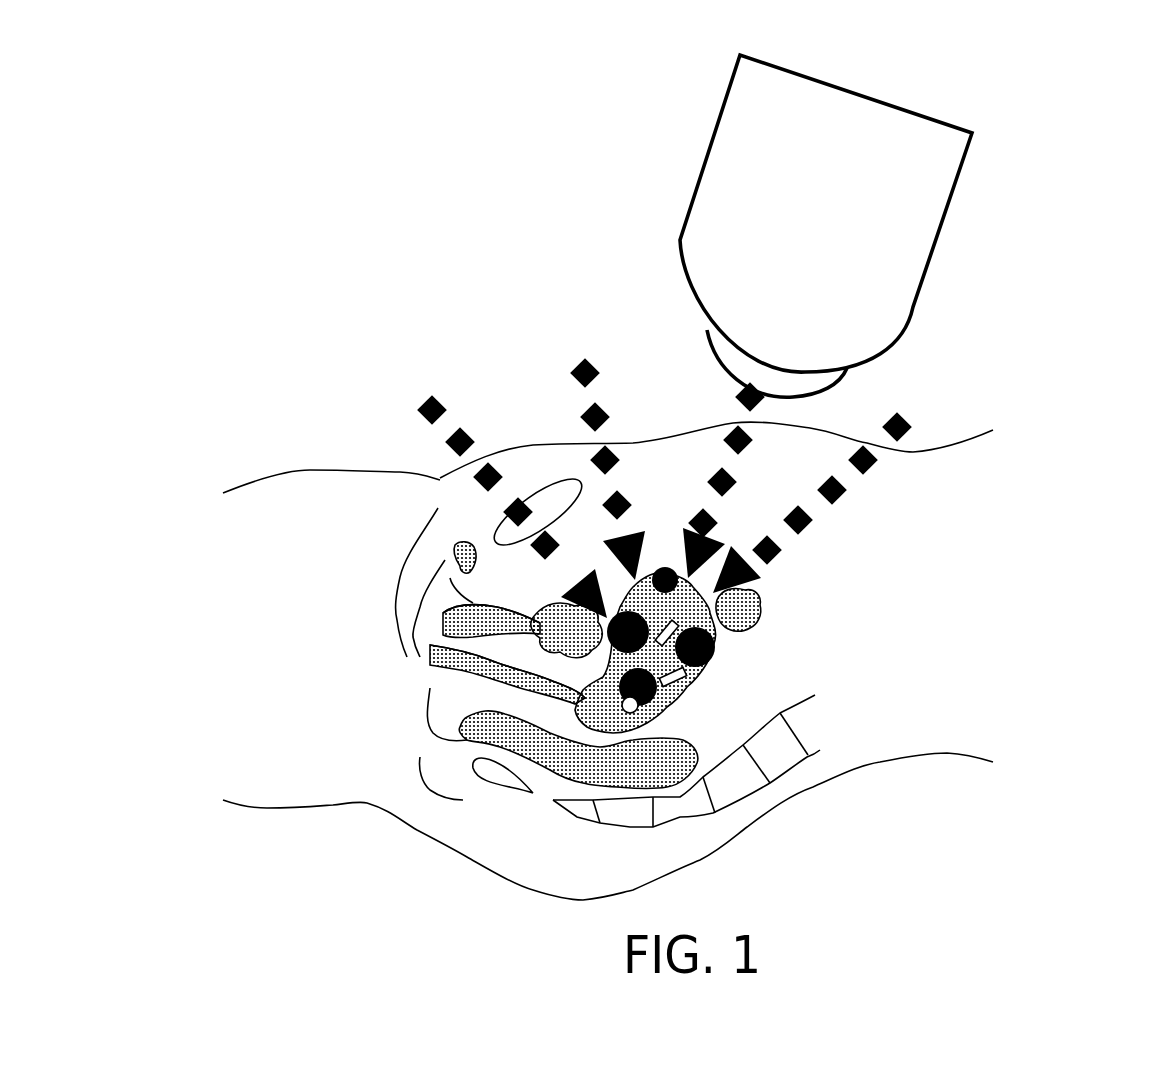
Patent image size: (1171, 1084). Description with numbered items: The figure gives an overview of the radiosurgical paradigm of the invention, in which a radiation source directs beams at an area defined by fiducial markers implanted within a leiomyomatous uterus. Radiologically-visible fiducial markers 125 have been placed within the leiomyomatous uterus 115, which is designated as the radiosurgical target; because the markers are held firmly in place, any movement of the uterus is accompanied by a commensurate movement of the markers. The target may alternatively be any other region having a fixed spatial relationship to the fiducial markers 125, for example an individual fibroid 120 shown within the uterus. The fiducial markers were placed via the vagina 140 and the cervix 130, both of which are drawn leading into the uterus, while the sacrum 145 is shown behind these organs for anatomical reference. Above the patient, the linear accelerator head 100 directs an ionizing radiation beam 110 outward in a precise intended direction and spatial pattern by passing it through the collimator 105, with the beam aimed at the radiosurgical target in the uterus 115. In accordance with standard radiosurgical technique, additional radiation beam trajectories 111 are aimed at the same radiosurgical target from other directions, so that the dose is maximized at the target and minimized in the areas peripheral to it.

The linear accelerator head 100 is at (840, 333).
The collimator 105 is at (800, 392).
The ionizing radiation beam 110 is at (745, 450).
The additional radiation beam trajectories 111 is at (755, 572).
The leiomyomatous uterus 115 is at (700, 687).
The individual fibroid 120 is at (720, 647).
The fiducial markers 125 is at (630, 705).
The cervix 130 is at (580, 688).
The vagina 140 is at (600, 660).
The sacrum 145 is at (727, 793).